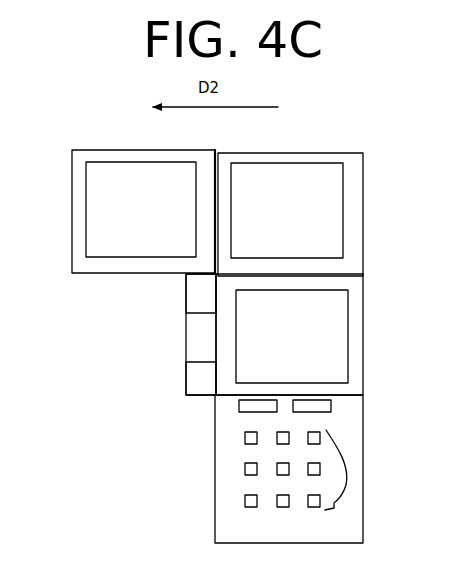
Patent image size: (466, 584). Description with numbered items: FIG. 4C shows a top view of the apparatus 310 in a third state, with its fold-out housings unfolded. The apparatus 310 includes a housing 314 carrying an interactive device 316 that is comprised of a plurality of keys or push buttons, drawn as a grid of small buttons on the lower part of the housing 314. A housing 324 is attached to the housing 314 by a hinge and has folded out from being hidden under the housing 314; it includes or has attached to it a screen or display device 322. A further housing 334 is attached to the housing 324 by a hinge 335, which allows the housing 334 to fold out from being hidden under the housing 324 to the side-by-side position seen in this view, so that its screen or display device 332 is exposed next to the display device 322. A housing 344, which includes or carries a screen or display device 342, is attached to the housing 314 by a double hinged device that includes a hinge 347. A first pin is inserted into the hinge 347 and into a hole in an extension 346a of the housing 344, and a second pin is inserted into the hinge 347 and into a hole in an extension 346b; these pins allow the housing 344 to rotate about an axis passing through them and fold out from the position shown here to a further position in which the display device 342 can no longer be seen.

The apparatus 310 is at (379, 256).
The housing 314 is at (363, 411).
The interactive device 316 is at (347, 485).
The display device 322 is at (290, 180).
The housing 324 is at (353, 195).
The display device 332 is at (97, 212).
The housing 334 is at (107, 163).
The hinge 335 is at (215, 213).
The display device 342 is at (310, 342).
The housing 344 is at (357, 354).
The extension 346a is at (195, 293).
The extension 346b is at (192, 386).
The hinge 347 is at (187, 337).